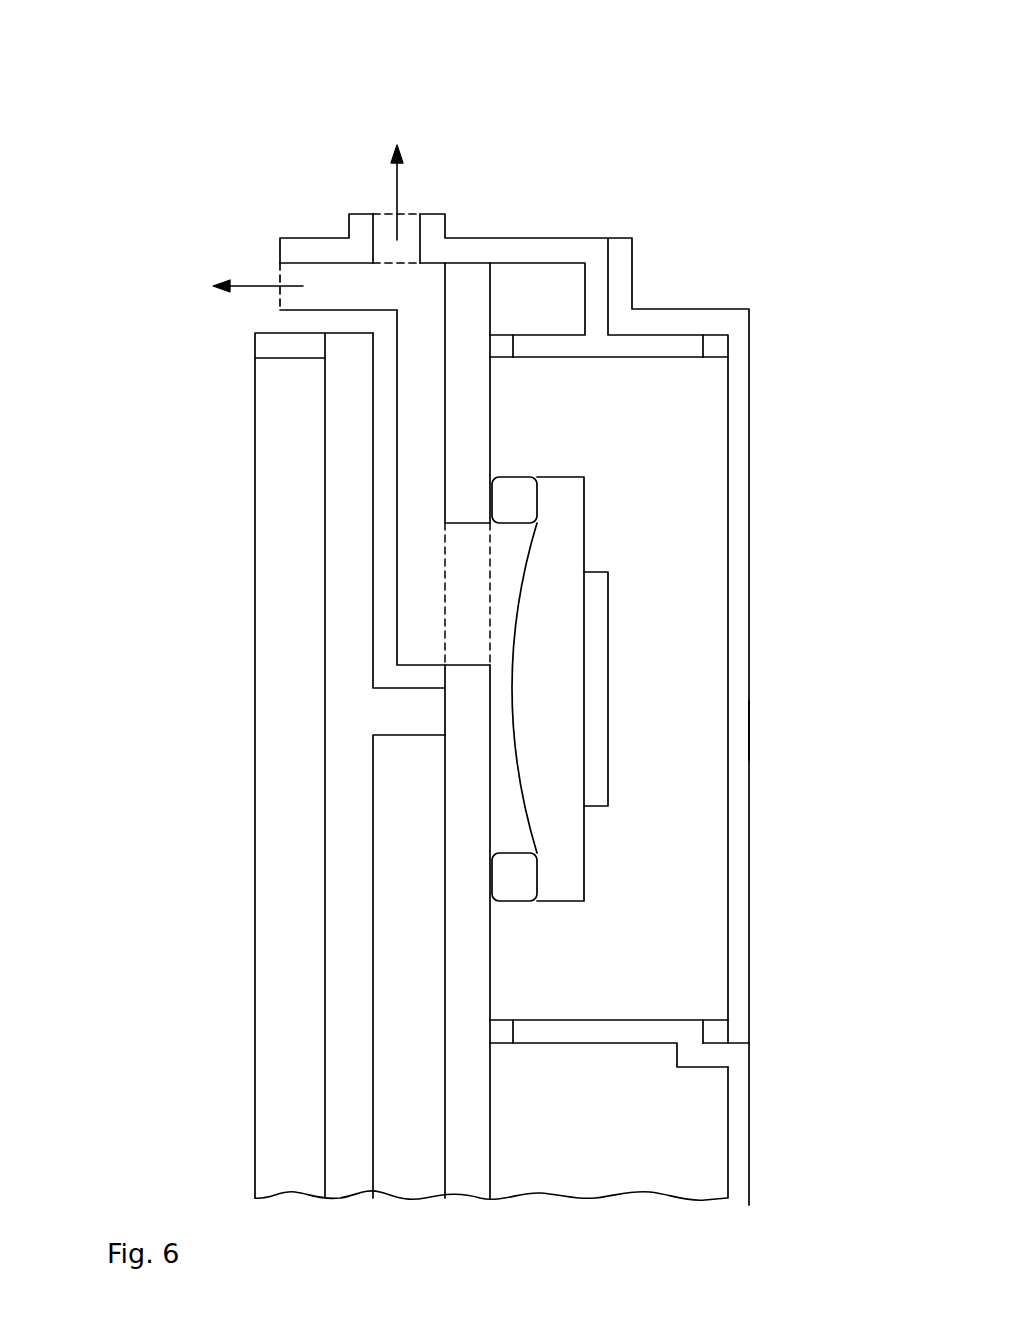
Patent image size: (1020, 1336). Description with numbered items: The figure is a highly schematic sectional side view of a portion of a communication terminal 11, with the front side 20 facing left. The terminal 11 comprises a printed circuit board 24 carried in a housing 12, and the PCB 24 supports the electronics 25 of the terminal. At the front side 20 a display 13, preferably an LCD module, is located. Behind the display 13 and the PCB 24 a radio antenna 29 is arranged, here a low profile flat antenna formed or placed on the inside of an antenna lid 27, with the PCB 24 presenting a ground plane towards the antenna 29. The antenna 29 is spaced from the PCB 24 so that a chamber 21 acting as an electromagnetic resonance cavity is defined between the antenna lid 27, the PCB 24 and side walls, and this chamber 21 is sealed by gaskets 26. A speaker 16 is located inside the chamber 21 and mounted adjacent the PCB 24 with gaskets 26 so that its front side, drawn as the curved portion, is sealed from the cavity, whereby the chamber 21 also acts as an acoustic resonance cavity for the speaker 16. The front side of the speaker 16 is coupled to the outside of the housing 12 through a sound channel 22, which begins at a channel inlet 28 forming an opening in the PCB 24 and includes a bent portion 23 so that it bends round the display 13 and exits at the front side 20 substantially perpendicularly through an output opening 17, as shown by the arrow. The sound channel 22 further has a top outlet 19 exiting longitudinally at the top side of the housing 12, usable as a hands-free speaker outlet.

The communication terminal 11 is at (759, 159).
The housing 12 is at (575, 240).
The display 13 is at (275, 487).
The speaker 16 is at (573, 647).
The output opening 17 is at (258, 270).
The sound channel top outlet 19 is at (373, 193).
The front side 20 is at (141, 682).
The chamber 21 is at (652, 737).
The sound channel 22 is at (405, 397).
The bent portion 23 is at (426, 294).
The printed circuit board 24 is at (457, 1180).
The electronics 25 is at (390, 1183).
The gaskets 26 is at (510, 490).
The antenna lid 27 is at (742, 567).
The channel inlet 28 is at (460, 628).
The radio antenna 29 is at (725, 516).